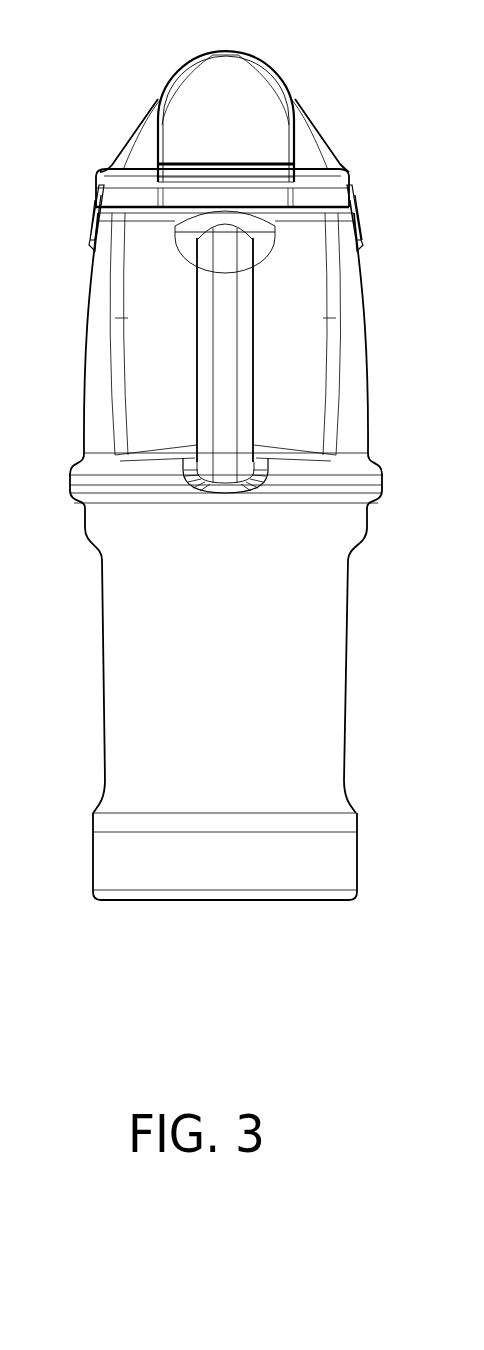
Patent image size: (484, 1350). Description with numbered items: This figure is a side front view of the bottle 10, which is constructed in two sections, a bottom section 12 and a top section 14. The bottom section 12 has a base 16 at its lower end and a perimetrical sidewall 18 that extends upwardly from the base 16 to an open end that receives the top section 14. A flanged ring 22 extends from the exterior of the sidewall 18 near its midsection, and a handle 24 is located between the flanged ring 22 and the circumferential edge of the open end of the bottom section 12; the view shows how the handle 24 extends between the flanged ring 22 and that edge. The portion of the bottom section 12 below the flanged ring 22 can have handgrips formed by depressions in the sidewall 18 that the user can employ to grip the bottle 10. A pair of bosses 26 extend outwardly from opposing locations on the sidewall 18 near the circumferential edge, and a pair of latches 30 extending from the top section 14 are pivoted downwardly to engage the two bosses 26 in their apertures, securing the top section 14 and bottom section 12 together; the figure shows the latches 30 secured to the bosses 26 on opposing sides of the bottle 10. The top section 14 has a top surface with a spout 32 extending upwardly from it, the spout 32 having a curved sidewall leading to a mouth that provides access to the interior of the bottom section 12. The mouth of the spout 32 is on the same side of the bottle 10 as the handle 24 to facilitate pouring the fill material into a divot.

The bottle 10 is at (381, 80).
The bottom section 12 is at (102, 665).
The top section 14 is at (130, 130).
The base 16 is at (313, 903).
The perimetrical sidewall 18 is at (288, 663).
The flanged ring 22 is at (381, 481).
The handle 24 is at (230, 396).
The bosses 26 is at (88, 218).
The latches 30 is at (88, 252).
The spout 32 is at (276, 67).